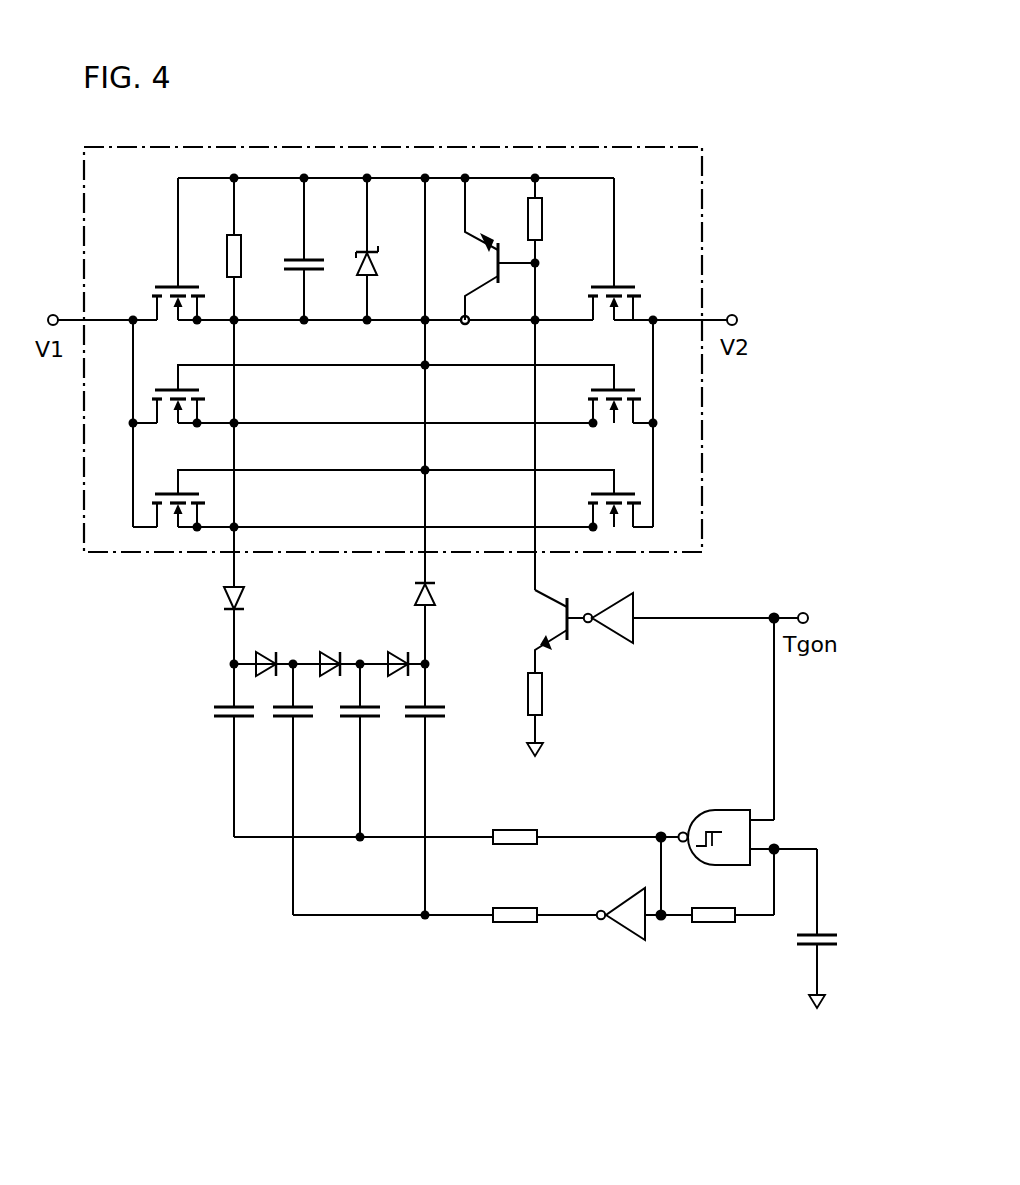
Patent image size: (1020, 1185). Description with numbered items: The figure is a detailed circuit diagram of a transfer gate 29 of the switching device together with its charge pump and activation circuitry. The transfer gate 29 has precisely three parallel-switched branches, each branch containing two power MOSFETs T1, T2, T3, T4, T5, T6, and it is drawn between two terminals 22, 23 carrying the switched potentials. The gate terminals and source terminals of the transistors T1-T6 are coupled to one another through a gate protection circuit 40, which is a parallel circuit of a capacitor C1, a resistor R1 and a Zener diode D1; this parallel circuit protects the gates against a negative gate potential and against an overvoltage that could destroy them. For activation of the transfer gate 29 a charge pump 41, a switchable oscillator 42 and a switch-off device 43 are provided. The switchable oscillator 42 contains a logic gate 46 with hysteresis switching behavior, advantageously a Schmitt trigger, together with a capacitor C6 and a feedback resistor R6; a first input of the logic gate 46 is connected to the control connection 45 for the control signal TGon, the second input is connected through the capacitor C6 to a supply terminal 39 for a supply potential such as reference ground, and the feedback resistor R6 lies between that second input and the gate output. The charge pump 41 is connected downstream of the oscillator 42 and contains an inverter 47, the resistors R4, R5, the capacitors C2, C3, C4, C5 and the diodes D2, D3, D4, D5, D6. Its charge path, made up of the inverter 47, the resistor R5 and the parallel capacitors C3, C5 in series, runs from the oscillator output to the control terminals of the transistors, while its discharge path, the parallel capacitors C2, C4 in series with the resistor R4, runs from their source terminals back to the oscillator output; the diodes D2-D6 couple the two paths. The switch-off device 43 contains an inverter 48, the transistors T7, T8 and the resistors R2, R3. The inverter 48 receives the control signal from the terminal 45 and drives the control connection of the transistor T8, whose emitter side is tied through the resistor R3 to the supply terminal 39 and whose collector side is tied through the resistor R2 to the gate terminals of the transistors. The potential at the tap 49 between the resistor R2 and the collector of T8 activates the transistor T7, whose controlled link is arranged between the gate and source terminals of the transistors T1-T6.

The transfer gate 29 is at (413, 147).
The gate protection circuit 40 is at (283, 232).
The first terminal V1 22 is at (49, 315).
The second terminal V2 23 is at (738, 320).
The tap 49 is at (540, 263).
The charge pump 41 is at (324, 773).
The switch-off device 43 is at (601, 647).
The inverter 48 is at (633, 635).
The control connection 45 is at (803, 612).
The supply terminal 39 is at (528, 752).
The switchable oscillator 42 is at (673, 919).
The logic gate 46 is at (716, 809).
The inverter 47 is at (620, 924).
The power MOSFET T1 is at (156, 283).
The power MOSFET T2 is at (637, 283).
The power MOSFET T3 is at (168, 386).
The power MOSFET T4 is at (624, 386).
The power MOSFET T5 is at (168, 490).
The power MOSFET T6 is at (624, 490).
The transistor T7 is at (496, 264).
The transistor T8 is at (562, 621).
The resistor R1 is at (242, 263).
The resistor R2 is at (542, 210).
The resistor R3 is at (542, 695).
The resistor R4 is at (512, 830).
The resistor R5 is at (513, 922).
The feedback resistor R6 is at (712, 922).
The capacitor C1 is at (316, 262).
The capacitor C2 is at (222, 720).
The capacitor C3 is at (285, 720).
The capacitor C4 is at (355, 718).
The capacitor C5 is at (420, 718).
The capacitor C6 is at (826, 935).
The Zener diode D1 is at (375, 257).
The diode D2 is at (224, 598).
The diode D3 is at (262, 657).
The diode D4 is at (322, 657).
The diode D5 is at (390, 657).
The diode D6 is at (436, 593).